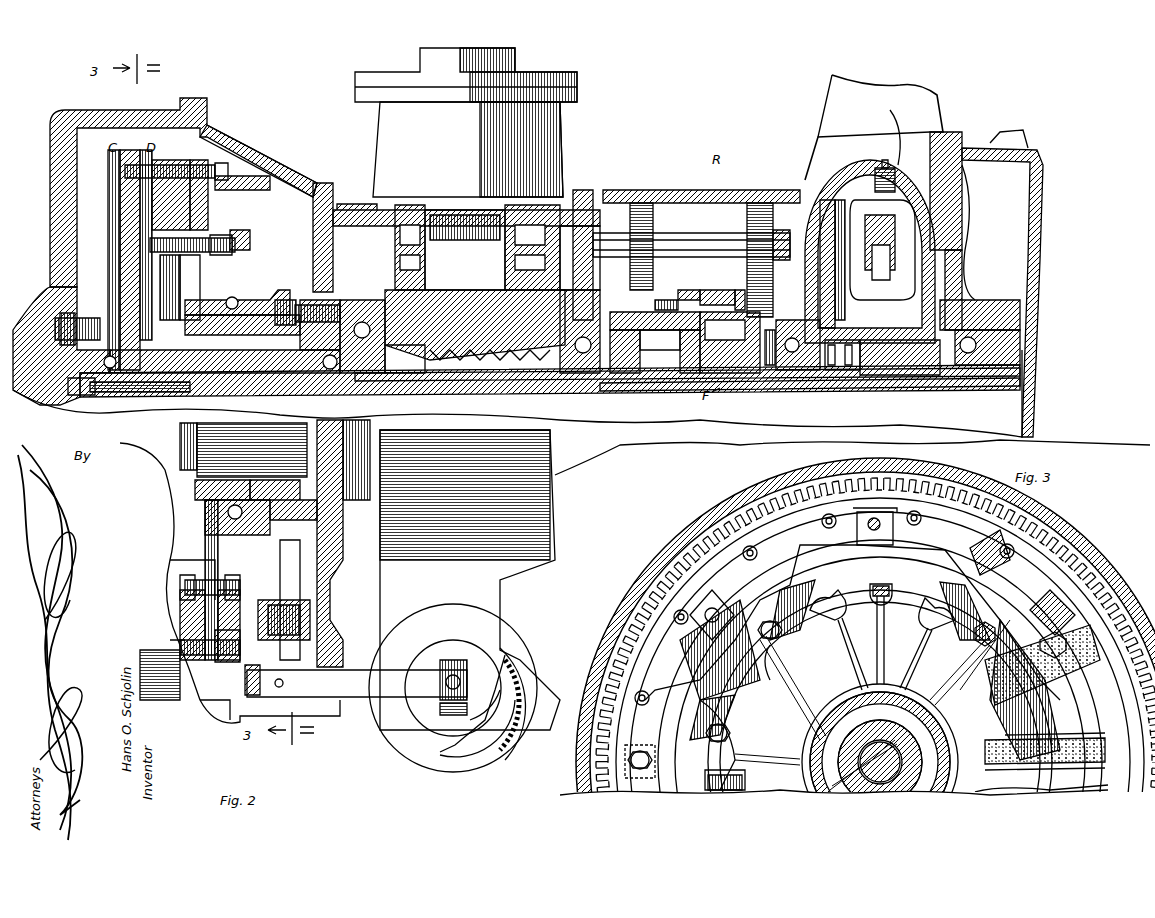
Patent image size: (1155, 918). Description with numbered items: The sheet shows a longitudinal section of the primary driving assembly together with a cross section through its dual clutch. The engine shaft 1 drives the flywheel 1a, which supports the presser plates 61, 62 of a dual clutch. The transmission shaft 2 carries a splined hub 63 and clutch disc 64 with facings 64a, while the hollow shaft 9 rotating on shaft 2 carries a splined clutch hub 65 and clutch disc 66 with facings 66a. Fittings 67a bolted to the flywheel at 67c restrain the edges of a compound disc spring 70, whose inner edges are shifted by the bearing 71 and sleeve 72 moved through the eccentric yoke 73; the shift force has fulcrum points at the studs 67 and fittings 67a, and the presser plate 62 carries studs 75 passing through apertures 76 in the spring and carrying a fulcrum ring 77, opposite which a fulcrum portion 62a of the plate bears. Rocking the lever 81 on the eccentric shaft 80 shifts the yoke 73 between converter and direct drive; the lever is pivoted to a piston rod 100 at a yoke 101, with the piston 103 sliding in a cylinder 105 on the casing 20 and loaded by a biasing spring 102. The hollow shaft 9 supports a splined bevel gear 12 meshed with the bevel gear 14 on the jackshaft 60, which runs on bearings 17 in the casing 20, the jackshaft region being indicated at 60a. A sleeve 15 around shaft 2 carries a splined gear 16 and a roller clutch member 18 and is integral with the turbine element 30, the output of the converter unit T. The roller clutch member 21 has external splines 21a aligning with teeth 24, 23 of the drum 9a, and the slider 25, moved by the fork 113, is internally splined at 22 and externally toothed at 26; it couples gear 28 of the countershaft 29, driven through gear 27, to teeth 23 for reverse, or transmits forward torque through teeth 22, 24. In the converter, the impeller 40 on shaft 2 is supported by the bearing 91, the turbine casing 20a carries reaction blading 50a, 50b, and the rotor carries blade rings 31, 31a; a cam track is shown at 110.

In FIG. 2, the engine shaft 1 is at (72, 352).
In FIG. 2, the flywheel 1a is at (78, 150).
In FIG. 3, the flywheel 1a is at (625, 645).
In FIG. 2, the transmission shaft 2 is at (185, 430).
In FIG. 3, the transmission shaft 2 is at (895, 763).
In FIG. 2, the hollow output shaft 9 is at (378, 397).
In FIG. 3, the hollow output shaft 9 is at (915, 742).
In FIG. 2, the drum 9a is at (602, 380).
In FIG. 2, the splined bevel gear 12 is at (398, 380).
In FIG. 2, the bevel gear 14 is at (400, 315).
In FIG. 2, the sleeve 15 is at (820, 372).
In FIG. 2, the splined gear 16 is at (768, 370).
In FIG. 2, the bearings 17 is at (515, 255).
In FIG. 2, the roller clutch member 18 is at (735, 360).
In FIG. 2, the casing 20 is at (305, 182).
In FIG. 2, the turbine casing 20a is at (830, 190).
In FIG. 2, the roller clutch member 21 is at (655, 342).
In FIG. 2, the external splines 21a is at (730, 342).
In FIG. 2, the internal splines 22 is at (705, 292).
In FIG. 2, the teeth 23 is at (640, 303).
In FIG. 2, the teeth 24 is at (665, 300).
In FIG. 2, the slider 25 is at (738, 290).
In FIG. 2, the external teeth 26 is at (688, 290).
In FIG. 2, the gear 27 is at (760, 205).
In FIG. 2, the gear 28 is at (645, 205).
In FIG. 2, the countershaft 29 is at (705, 240).
In FIG. 2, the turbine element 30 is at (880, 375).
In FIG. 2, the ring of blades 31 is at (845, 270).
In FIG. 2, the ring of blades 31a is at (925, 212).
In FIG. 2, the turbine impeller 40 is at (945, 305).
In FIG. 2, the reaction blading 50a is at (885, 165).
In FIG. 2, the reaction blading 50b is at (835, 240).
In FIG. 2, the jackshaft 60 is at (452, 212).
In FIG. 2, the cylinder bearing 60a is at (403, 212).
In FIG. 2, the presser plate 61 is at (135, 165).
In FIG. 2, the presser plate 62 is at (205, 235).
In FIG. 3, the presser plate 62 is at (985, 660).
In FIG. 2, the fulcrum portion 62a is at (185, 610).
In FIG. 2, the splined hub 63 is at (82, 388).
In FIG. 2, the clutch disc 64 is at (75, 290).
In FIG. 2, the facings 64a is at (115, 237).
In FIG. 3, the facings 64a is at (1105, 752).
In FIG. 2, the splined clutch hub 65 is at (212, 396).
In FIG. 2, the clutch disc 66 is at (195, 282).
In FIG. 2, the facings 66a is at (180, 265).
In FIG. 3, the facings 66a is at (1050, 690).
In FIG. 2, the studs 67 is at (220, 176).
In FIG. 3, the studs 67 is at (874, 532).
In FIG. 2, the fittings 67a is at (190, 165).
In FIG. 3, the fittings 67a is at (752, 545).
In FIG. 3, the bolts 67c is at (828, 514).
In FIG. 2, the compound disc spring 70 is at (278, 300).
In FIG. 3, the compound disc spring 70 is at (940, 560).
In FIG. 2, the bearing 71 is at (237, 520).
In FIG. 2, the sleeve 72 is at (195, 490).
In FIG. 2, the eccentric yoke 73 is at (300, 548).
In FIG. 2, the studs 75 is at (215, 242).
In FIG. 3, the studs 75 is at (892, 590).
In FIG. 2, the apertures 76 is at (225, 232).
In FIG. 3, the apertures 76 is at (835, 615).
In FIG. 2, the fulcrum ring 77 is at (225, 605).
In FIG. 3, the fulcrum ring 77 is at (715, 772).
In FIG. 2, the eccentric shaft 80 is at (268, 672).
In FIG. 2, the lever 81 is at (330, 697).
In FIG. 2, the bearing 91 is at (1010, 335).
In FIG. 2, the piston rod 100 is at (440, 670).
In FIG. 2, the yoke 101 is at (440, 682).
In FIG. 2, the biasing spring 102 is at (505, 688).
In FIG. 2, the piston 103 is at (455, 735).
In FIG. 2, the cylinder 105 is at (495, 735).
In FIG. 2, the cam track 110 is at (500, 710).
In FIG. 2, the fork 113 is at (760, 250).
In FIG. 2, the converter unit T is at (924, 256).